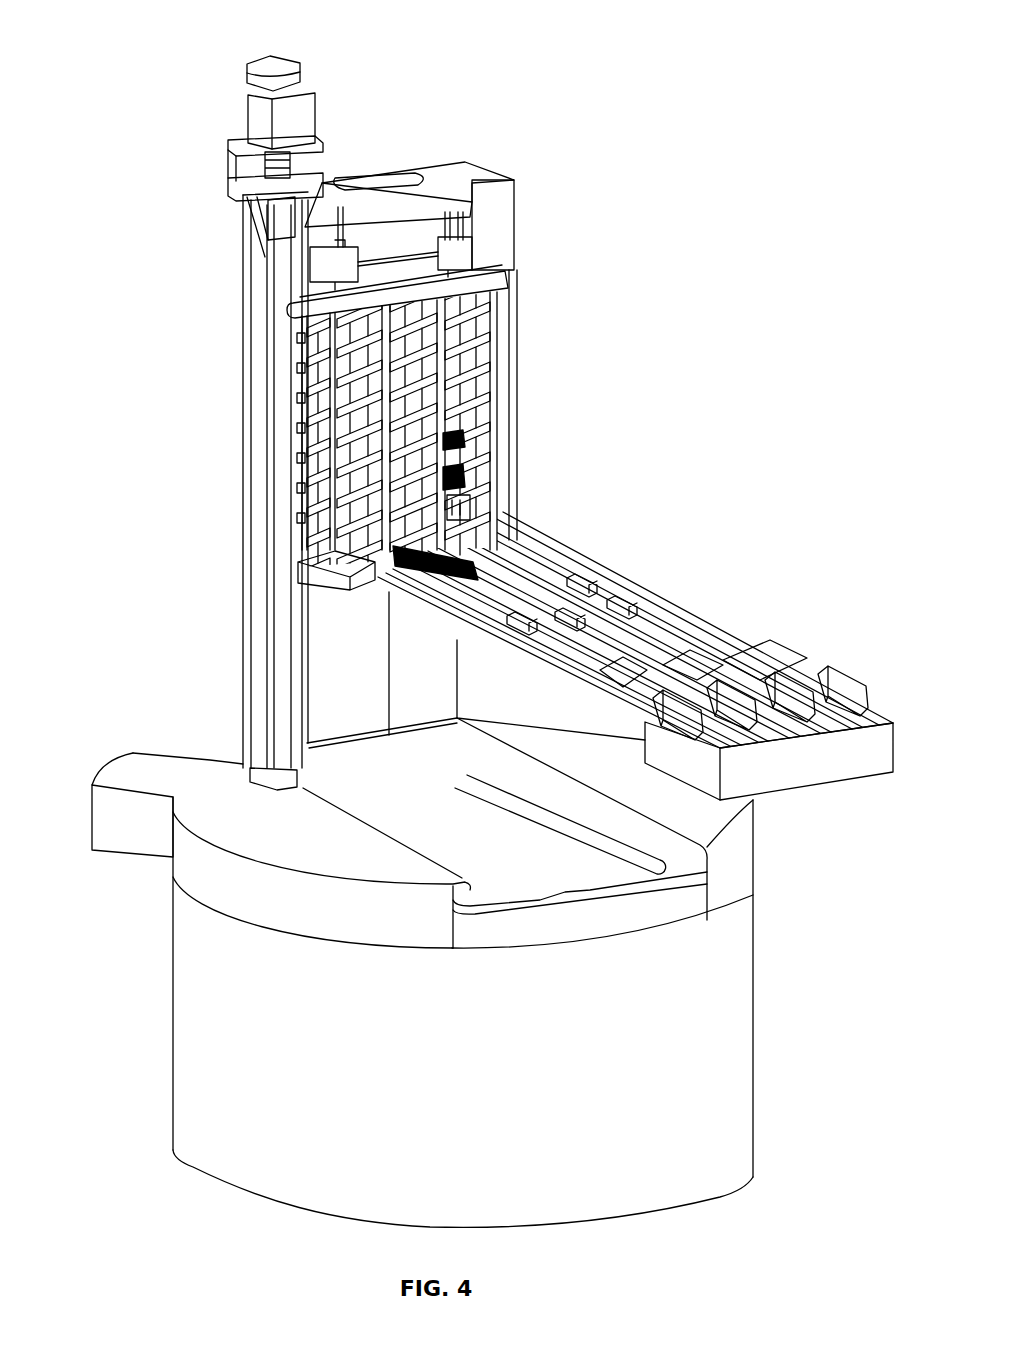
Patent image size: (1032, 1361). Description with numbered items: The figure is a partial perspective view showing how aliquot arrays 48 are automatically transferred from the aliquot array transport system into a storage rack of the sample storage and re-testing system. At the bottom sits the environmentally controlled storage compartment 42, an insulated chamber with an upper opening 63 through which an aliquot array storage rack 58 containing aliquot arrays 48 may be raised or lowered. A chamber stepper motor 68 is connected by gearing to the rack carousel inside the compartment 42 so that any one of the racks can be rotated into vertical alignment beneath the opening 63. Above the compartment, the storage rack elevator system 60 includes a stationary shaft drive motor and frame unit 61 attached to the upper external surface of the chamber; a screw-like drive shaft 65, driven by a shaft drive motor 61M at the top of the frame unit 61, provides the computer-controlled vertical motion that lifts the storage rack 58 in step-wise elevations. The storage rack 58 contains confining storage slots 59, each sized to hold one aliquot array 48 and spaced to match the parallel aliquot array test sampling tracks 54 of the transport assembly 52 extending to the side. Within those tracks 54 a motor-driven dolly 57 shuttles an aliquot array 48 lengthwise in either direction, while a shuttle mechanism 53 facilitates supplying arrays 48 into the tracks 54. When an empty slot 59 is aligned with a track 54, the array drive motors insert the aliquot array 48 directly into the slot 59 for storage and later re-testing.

The environmentally controlled storage compartment 42 is at (474, 1108).
The aliquot array 48 is at (495, 428).
The tray assembly 52 is at (593, 527).
The shuttle mechanism 53 is at (818, 770).
The aliquot array test sampling tracks 54 is at (610, 640).
The motor-driven dolly 57 is at (593, 573).
The aliquot array storage rack 58 is at (501, 276).
The storage slot 59 is at (493, 360).
The storage rack elevator system 60 is at (490, 154).
The shaft drive motor and frame unit 61 is at (455, 170).
The shaft drive motor 61M is at (280, 53).
The upper opening 63 is at (413, 820).
The drive shaft 65 is at (280, 390).
The chamber stepper motor 68 is at (117, 822).